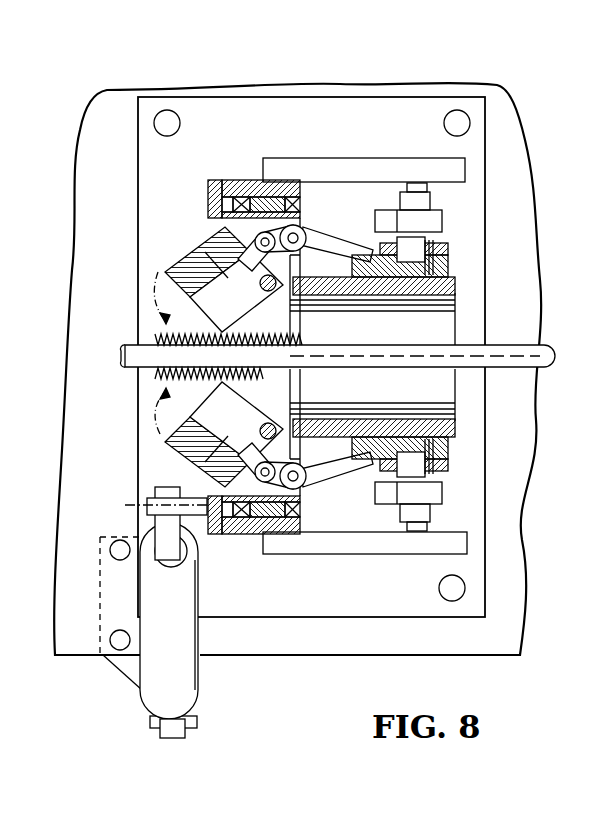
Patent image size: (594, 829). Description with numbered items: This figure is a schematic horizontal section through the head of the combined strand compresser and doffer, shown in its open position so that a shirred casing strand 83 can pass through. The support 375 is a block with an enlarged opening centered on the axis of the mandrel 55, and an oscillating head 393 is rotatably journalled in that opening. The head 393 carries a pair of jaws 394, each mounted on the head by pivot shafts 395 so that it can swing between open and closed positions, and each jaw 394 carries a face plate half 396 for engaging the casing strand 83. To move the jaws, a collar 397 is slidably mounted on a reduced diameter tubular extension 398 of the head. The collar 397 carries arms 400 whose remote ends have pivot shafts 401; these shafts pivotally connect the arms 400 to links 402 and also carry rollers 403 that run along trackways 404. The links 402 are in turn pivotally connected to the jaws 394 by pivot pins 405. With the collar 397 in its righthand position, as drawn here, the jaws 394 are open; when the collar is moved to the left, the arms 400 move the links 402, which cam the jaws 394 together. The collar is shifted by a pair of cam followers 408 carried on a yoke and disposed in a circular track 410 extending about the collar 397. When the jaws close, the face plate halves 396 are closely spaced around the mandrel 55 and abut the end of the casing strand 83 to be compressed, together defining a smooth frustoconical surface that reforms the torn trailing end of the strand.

The mandrel 55 is at (552, 345).
The shirred casing strand 83 is at (162, 383).
The support 375 is at (240, 180).
The oscillating head 393 is at (207, 192).
The jaws 394 is at (193, 303).
The pivot shafts 395 is at (292, 300).
The face plate half 396 is at (187, 253).
The collar 397 is at (447, 257).
The tubular extension 398 is at (455, 282).
The arms 400 is at (305, 228).
The pivot shafts 401 is at (322, 233).
The links 402 is at (250, 533).
The rollers 403 is at (270, 490).
The trackways 404 is at (220, 533).
The pivot pins 405 is at (266, 232).
The cam followers 408 is at (425, 232).
The circular track 410 is at (448, 450).